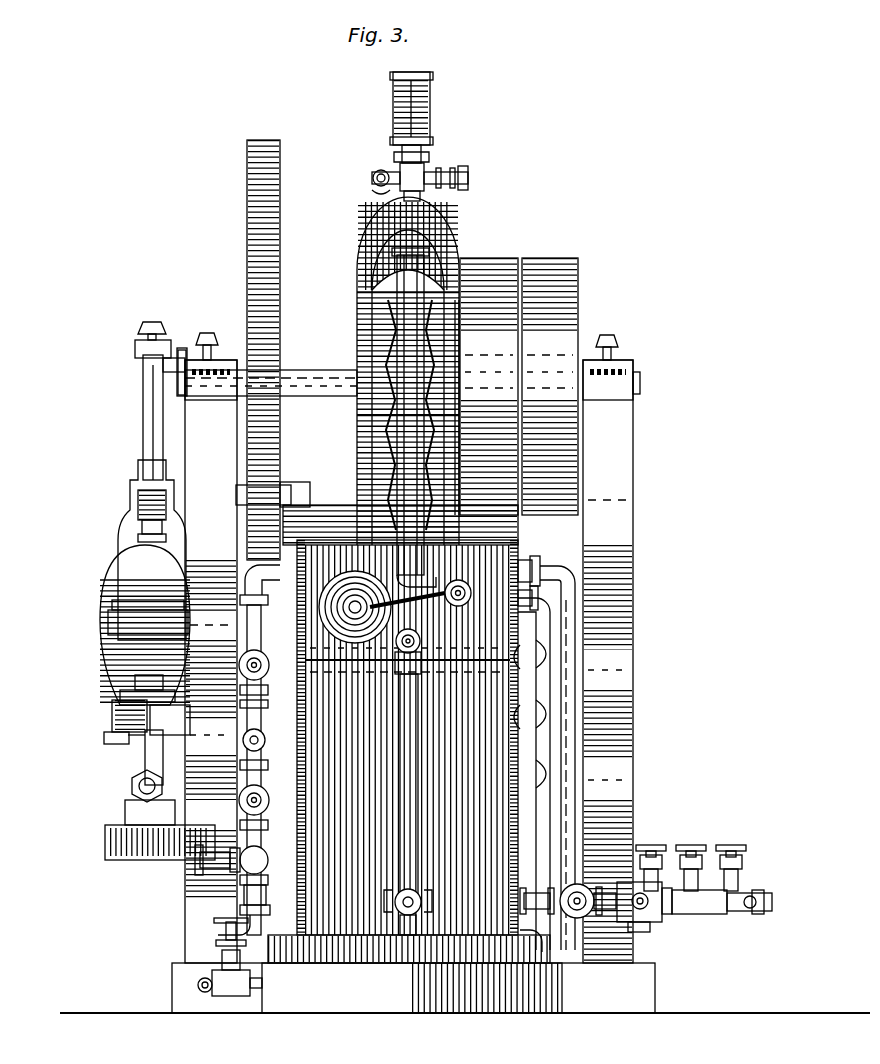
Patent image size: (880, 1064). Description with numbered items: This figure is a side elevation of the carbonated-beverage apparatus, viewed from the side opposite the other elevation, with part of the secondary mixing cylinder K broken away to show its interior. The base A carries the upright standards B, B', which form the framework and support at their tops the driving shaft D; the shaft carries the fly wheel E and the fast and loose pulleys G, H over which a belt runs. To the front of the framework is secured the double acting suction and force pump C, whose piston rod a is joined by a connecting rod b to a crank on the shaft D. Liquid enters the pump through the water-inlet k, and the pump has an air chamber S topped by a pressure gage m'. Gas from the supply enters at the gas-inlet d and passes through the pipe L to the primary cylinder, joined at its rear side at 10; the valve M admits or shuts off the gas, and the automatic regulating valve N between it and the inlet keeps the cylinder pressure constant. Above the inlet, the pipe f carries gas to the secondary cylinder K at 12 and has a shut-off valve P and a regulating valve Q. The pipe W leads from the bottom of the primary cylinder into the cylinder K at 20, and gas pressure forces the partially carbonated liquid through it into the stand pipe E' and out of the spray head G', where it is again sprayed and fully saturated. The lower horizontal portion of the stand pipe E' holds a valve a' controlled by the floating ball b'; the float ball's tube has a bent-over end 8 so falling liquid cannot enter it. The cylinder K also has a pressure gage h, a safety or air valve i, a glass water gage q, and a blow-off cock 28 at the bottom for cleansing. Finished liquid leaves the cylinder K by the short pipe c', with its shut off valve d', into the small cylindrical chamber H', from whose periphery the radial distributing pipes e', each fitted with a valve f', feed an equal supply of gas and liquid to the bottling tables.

The base A is at (413, 1000).
The pressure gage h is at (432, 118).
The safety or air valve i is at (468, 180).
The spray head G' is at (396, 371).
The stand pipe E' is at (379, 417).
The fly wheel E is at (273, 350).
The connection of pipe f to cylinder K 12 is at (302, 484).
The driving shaft D is at (318, 380).
The loose pulley H is at (493, 370).
The fast pulley G is at (550, 370).
The secondary mixing cylinder K is at (458, 252).
The upright standard B' is at (630, 649).
The upright standard B is at (153, 648).
The valve a' is at (409, 734).
The bent-over upper end of tube e 8 is at (362, 600).
The glass water gage q is at (412, 758).
The connection of pipe W to cylinder K 20 is at (525, 562).
The connection of pipe L to cylinder I 10 is at (540, 588).
The gas pipe L is at (578, 586).
The pipe W is at (565, 675).
The pipe f is at (240, 555).
The floating ball b' is at (263, 770).
The automatic regulating valve N is at (245, 808).
The valve M is at (250, 858).
The blow-off cock 28 is at (212, 985).
The connecting rod b is at (135, 401).
The double acting suction and force pump C is at (180, 350).
The pressure gage m' is at (132, 550).
The air chamber S is at (112, 620).
The shut-off valve P is at (140, 633).
The piston rod a is at (112, 687).
The automatic regulating valve Q is at (125, 712).
The water-inlet k is at (140, 760).
The gas-inlet d is at (130, 797).
The short pipe c' is at (537, 878).
The shut off valve d' is at (616, 923).
The cylindrical vessel or chamber H' is at (664, 918).
The radial distributing pipes e' is at (733, 906).
The valve f' is at (705, 854).